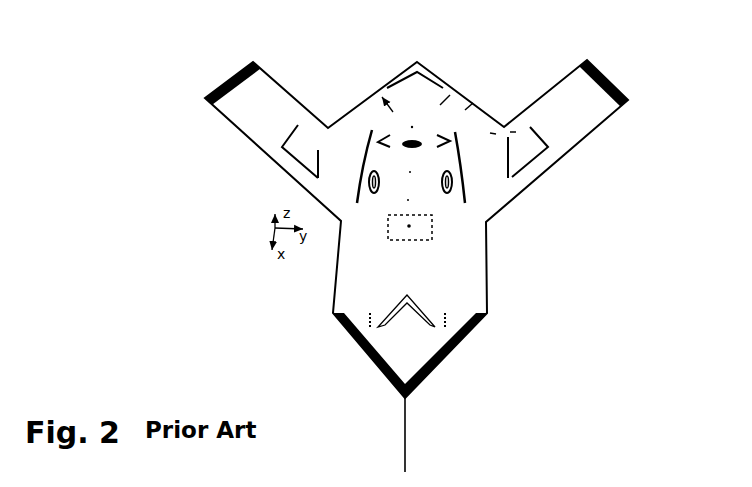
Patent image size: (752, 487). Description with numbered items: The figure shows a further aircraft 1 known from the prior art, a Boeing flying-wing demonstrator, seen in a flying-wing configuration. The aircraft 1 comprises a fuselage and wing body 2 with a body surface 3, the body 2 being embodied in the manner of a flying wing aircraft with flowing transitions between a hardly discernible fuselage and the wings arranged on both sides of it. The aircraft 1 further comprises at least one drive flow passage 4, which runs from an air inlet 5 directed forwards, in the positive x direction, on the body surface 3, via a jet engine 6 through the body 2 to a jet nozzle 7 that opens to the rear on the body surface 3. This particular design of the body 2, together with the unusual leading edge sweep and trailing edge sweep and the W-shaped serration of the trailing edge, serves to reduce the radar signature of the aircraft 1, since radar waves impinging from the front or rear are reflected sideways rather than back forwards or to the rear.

The aircraft 1 is at (312, 46).
The fuselage and wing body 2 is at (347, 160).
The body surface 3 is at (358, 130).
The drive flow passage 4 is at (467, 188).
The air inlet 5 is at (402, 315).
The jet engine 6 is at (430, 157).
The jet nozzle 7 is at (427, 58).